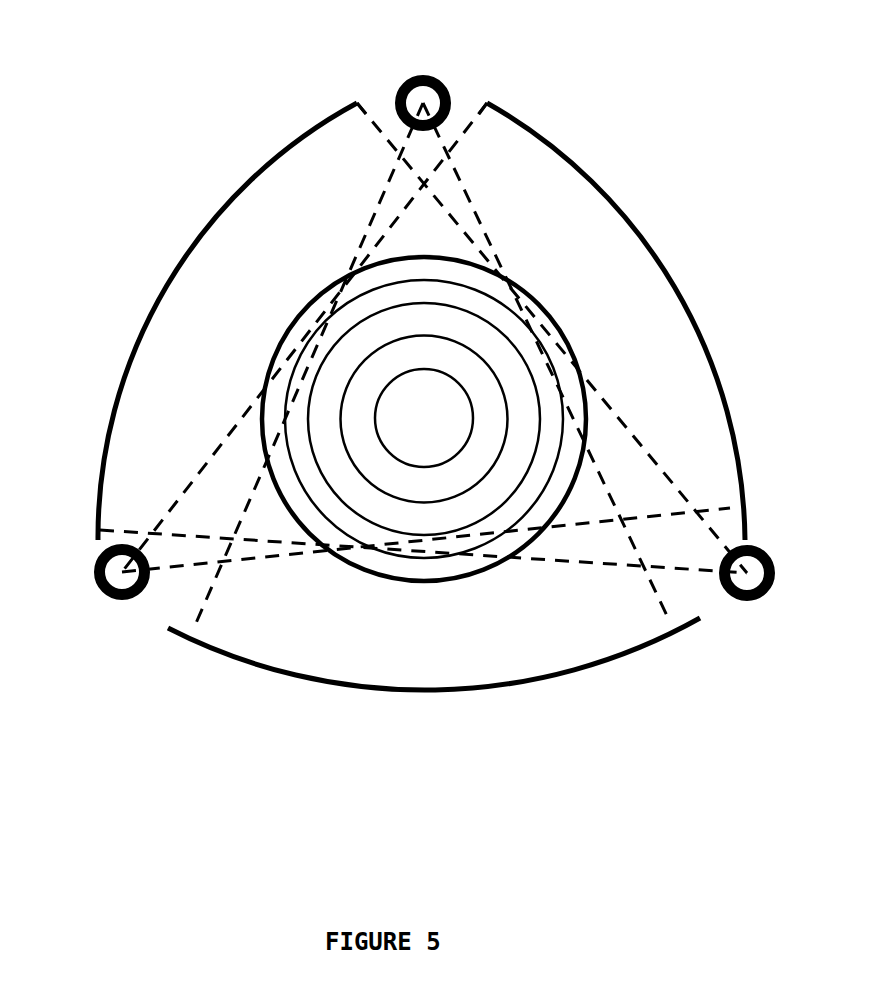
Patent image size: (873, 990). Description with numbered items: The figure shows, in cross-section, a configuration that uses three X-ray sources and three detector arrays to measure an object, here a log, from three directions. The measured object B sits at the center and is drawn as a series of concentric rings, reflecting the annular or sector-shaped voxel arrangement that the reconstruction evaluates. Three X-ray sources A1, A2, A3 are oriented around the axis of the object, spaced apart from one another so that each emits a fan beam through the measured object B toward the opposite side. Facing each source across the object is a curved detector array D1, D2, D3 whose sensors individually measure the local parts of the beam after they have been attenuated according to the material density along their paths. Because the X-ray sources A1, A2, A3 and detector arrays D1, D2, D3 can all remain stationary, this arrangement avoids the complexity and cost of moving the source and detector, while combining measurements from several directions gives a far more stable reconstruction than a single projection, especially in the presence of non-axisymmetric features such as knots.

The X-ray source A1 is at (424, 63).
The X-ray source A2 is at (768, 576).
The X-ray source A3 is at (86, 582).
The measured object B is at (424, 419).
The detector array D1 is at (434, 682).
The detector array D2 is at (232, 321).
The detector array D3 is at (612, 321).